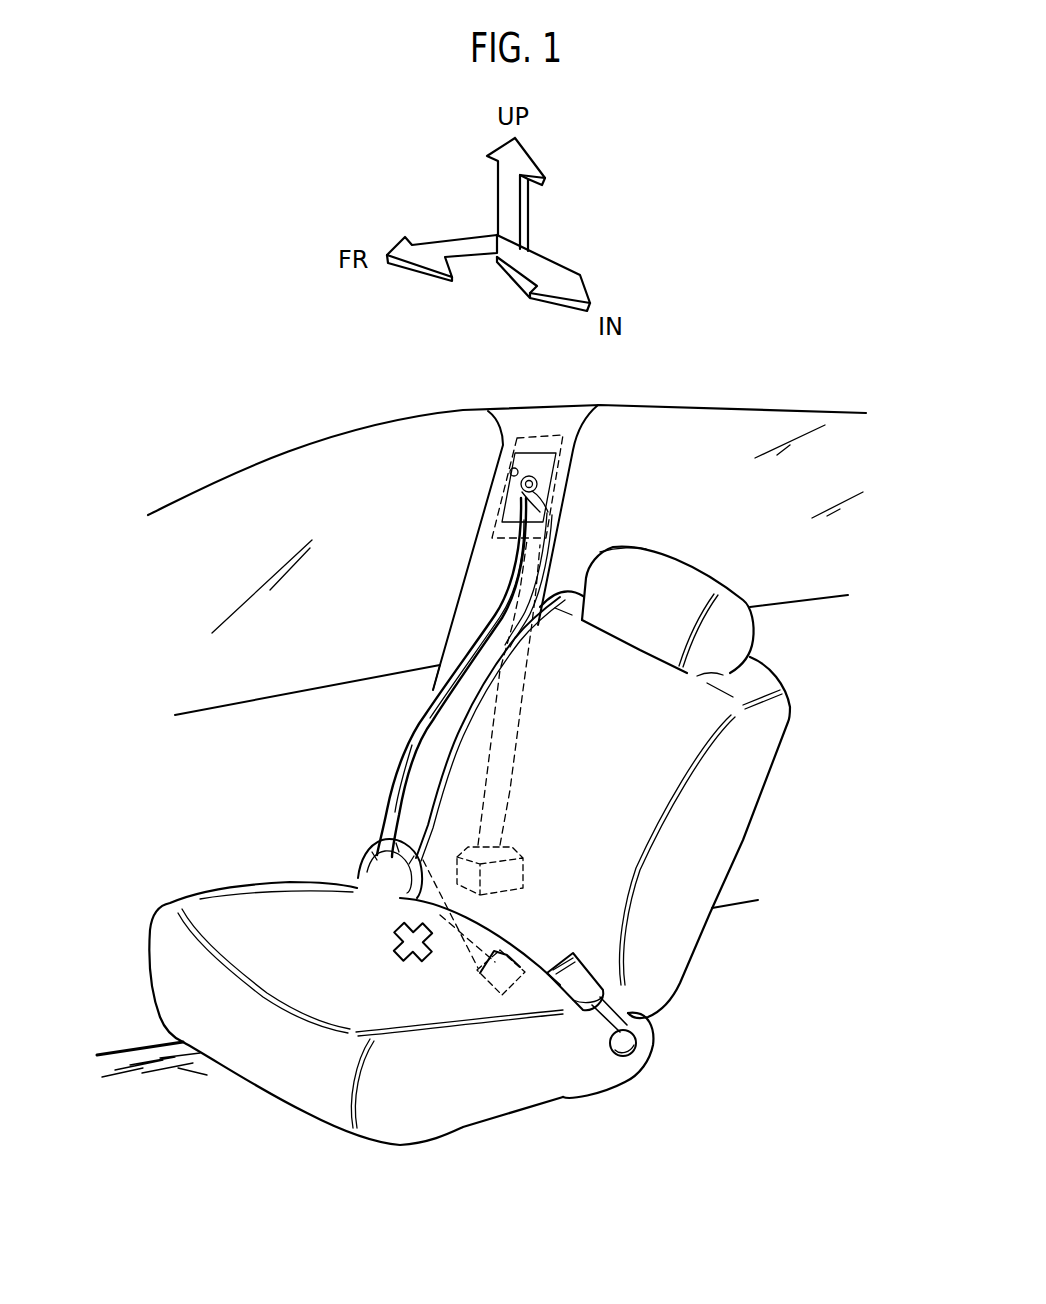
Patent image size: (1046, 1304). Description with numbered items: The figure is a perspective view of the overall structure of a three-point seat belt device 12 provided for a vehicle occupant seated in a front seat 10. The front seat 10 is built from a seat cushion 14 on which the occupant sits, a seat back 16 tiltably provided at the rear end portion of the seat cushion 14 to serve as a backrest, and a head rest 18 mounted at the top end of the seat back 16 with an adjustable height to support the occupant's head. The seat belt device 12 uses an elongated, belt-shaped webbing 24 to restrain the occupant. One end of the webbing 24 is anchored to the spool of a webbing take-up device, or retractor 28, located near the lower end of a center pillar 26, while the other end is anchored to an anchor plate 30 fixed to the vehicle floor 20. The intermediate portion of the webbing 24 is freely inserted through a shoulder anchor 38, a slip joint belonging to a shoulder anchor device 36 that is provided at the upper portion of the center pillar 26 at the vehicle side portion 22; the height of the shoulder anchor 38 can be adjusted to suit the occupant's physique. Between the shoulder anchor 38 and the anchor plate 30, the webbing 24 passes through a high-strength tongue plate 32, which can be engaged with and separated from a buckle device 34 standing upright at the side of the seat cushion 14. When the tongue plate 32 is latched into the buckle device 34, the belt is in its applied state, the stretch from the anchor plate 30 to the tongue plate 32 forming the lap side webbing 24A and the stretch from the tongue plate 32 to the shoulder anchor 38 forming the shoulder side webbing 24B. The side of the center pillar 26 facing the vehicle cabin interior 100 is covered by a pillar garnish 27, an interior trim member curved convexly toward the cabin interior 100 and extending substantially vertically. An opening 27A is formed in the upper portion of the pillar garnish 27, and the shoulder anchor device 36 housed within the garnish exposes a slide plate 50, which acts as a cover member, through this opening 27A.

The front seat 10 is at (492, 812).
The three-point seat belt device 12 is at (450, 788).
The seat cushion 14 is at (240, 923).
The seat back 16 is at (723, 830).
The head rest 18 is at (703, 587).
The vehicle floor 20 is at (153, 1065).
The vehicle side portion 22 is at (623, 486).
The webbing 24 is at (408, 733).
The lap side webbing 24A is at (360, 863).
The shoulder side webbing 24B is at (395, 782).
The center pillar 26 is at (558, 558).
The pillar garnish 27 is at (502, 555).
The opening 27A is at (512, 474).
The webbing take-up device (retractor) 28 is at (530, 866).
The anchor plate 30 is at (533, 940).
The tongue plate 32 is at (395, 957).
The buckle device 34 is at (573, 1005).
The shoulder anchor device 36 is at (548, 475).
The shoulder anchor (slip joint) 38 is at (520, 438).
The slide plate 50 is at (543, 462).
The vehicle cabin interior 100 is at (546, 788).